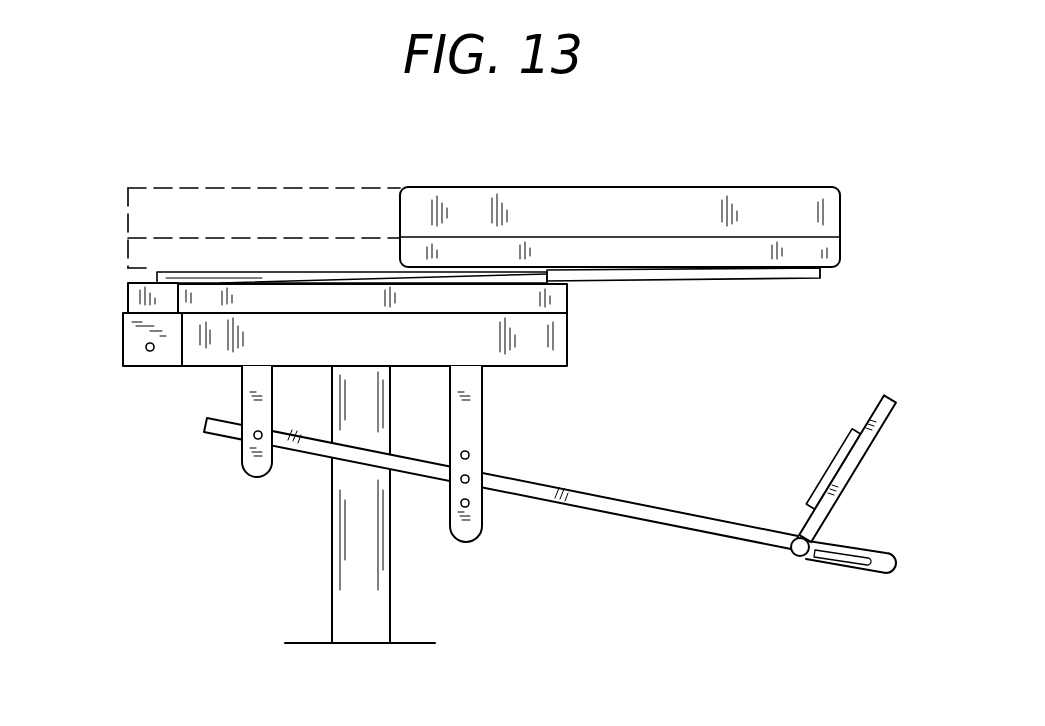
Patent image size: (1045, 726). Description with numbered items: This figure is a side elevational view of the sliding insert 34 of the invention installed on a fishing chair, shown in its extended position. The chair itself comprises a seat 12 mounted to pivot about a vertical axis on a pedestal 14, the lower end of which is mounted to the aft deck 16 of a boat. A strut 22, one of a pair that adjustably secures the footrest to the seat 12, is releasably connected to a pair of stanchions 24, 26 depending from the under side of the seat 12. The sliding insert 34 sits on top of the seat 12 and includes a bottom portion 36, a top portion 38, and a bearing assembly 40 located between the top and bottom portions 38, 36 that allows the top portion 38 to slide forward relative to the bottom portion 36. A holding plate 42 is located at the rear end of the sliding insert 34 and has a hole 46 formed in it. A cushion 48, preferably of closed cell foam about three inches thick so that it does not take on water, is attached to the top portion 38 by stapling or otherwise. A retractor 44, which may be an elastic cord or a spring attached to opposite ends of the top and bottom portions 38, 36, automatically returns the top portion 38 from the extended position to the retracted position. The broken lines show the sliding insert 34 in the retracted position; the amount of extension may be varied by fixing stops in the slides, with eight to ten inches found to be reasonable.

The seat 12 is at (380, 355).
The pedestal 14 is at (380, 567).
The aft deck 16 is at (300, 643).
The strut 22 is at (685, 528).
The stanchion 24 is at (258, 472).
The stanchion 26 is at (480, 528).
The sliding insert 34 is at (160, 158).
The bottom portion 36 is at (563, 302).
The top portion 38 is at (827, 262).
The bearing assembly 40 is at (690, 278).
The holding plate 42 is at (133, 356).
The retractor 44 is at (362, 281).
The hole 46 is at (154, 350).
The cushion 48 is at (650, 227).